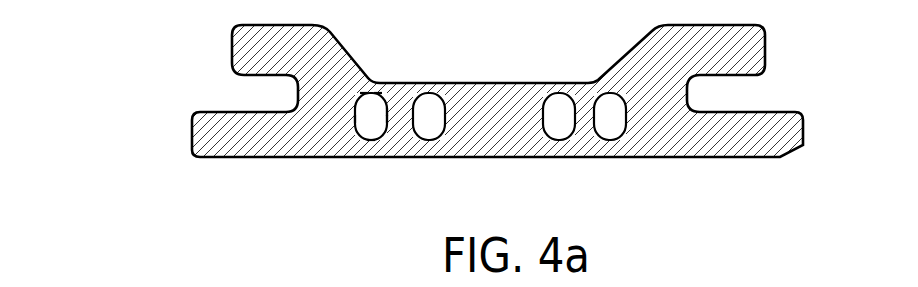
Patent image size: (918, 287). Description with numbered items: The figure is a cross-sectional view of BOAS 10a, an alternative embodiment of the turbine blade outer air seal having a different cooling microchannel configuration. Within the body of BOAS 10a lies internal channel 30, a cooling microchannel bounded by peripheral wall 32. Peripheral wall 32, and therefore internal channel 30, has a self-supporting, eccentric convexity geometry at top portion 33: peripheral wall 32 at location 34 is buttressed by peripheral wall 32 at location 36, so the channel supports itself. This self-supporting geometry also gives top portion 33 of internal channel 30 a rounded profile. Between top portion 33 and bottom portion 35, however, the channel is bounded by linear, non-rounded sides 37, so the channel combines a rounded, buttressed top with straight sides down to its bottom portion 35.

The BOAS 10a is at (178, 139).
The internal channel 30 is at (354, 137).
The peripheral wall 32 is at (378, 141).
The top portion 33 is at (378, 93).
The location 34 is at (362, 93).
The bottom portion 35 is at (370, 141).
The location 36 is at (358, 98).
The linear, non-rounded sides 37 is at (388, 114).